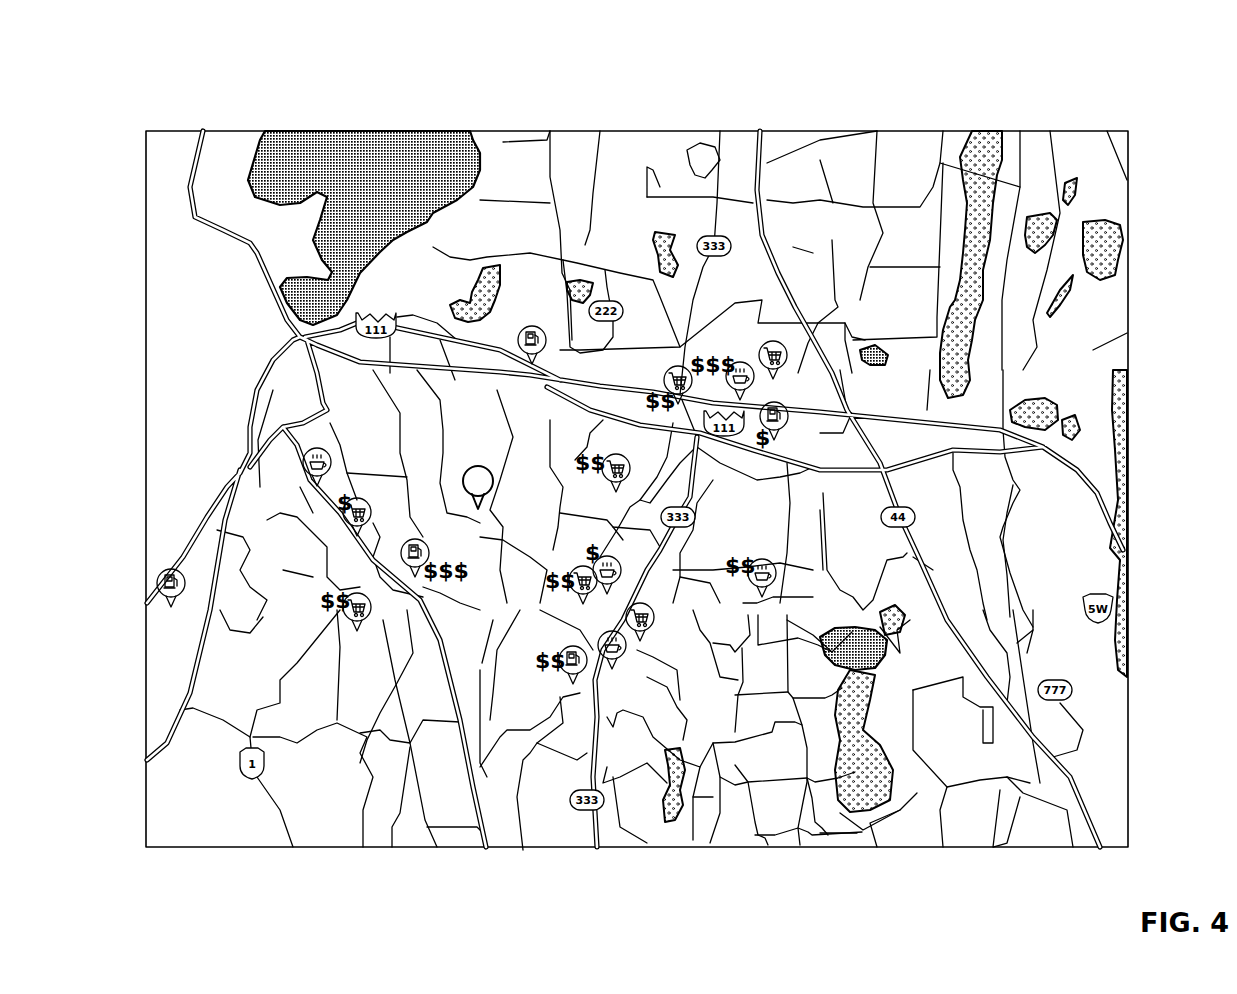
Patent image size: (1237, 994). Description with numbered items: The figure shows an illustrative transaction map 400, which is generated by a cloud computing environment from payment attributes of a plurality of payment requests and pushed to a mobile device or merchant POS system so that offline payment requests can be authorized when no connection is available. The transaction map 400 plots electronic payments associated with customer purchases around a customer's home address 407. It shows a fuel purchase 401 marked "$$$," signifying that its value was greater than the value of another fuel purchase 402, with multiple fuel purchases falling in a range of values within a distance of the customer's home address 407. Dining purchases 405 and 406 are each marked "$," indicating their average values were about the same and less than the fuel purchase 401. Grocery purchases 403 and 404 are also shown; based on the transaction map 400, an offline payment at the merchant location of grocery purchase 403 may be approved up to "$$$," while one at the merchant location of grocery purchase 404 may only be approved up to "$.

The transaction map 400 is at (552, 62).
The fuel purchase 401 is at (532, 326).
The fuel purchase 402 is at (155, 590).
The grocery purchase 403 is at (779, 341).
The grocery purchase 404 is at (647, 632).
The dining purchase 405 is at (620, 660).
The dining purchase 406 is at (303, 463).
The customer's home address 407 is at (462, 485).